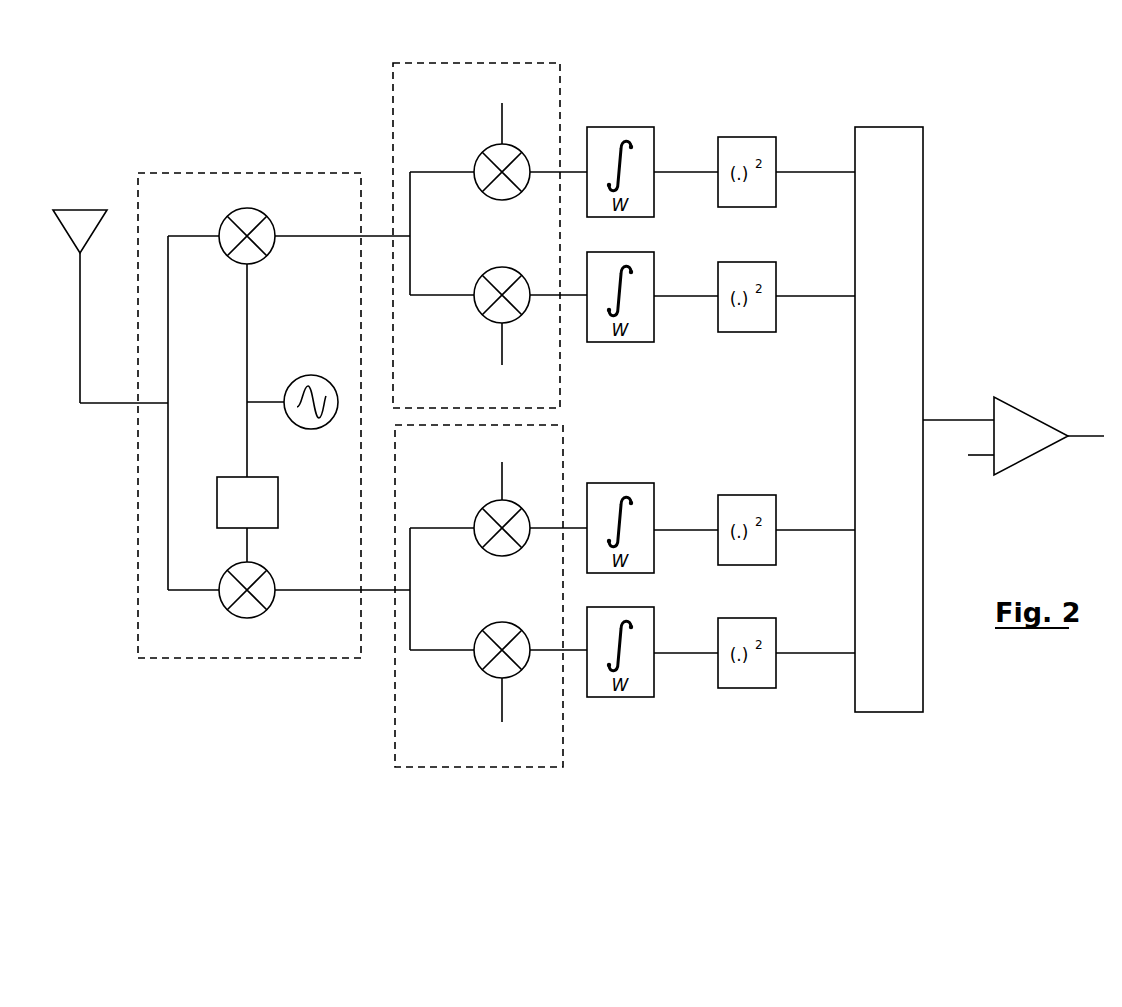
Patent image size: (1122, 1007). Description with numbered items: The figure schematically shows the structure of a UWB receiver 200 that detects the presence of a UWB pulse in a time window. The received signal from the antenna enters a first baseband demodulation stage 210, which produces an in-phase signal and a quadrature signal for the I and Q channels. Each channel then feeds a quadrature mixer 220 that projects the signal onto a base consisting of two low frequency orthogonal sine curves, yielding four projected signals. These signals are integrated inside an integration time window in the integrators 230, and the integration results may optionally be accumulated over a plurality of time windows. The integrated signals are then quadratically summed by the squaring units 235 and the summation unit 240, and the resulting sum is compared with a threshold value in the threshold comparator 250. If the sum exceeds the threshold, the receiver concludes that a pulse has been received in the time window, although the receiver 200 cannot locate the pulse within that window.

The UWB receiver 200 is at (1037, 156).
The first baseband demodulation stage 210 is at (220, 173).
The quadrature mixer 220 is at (393, 114).
The integrators 230 is at (611, 127).
The squaring unit 235 is at (741, 137).
The summation unit 240 is at (880, 127).
The threshold comparator 250 is at (1010, 397).